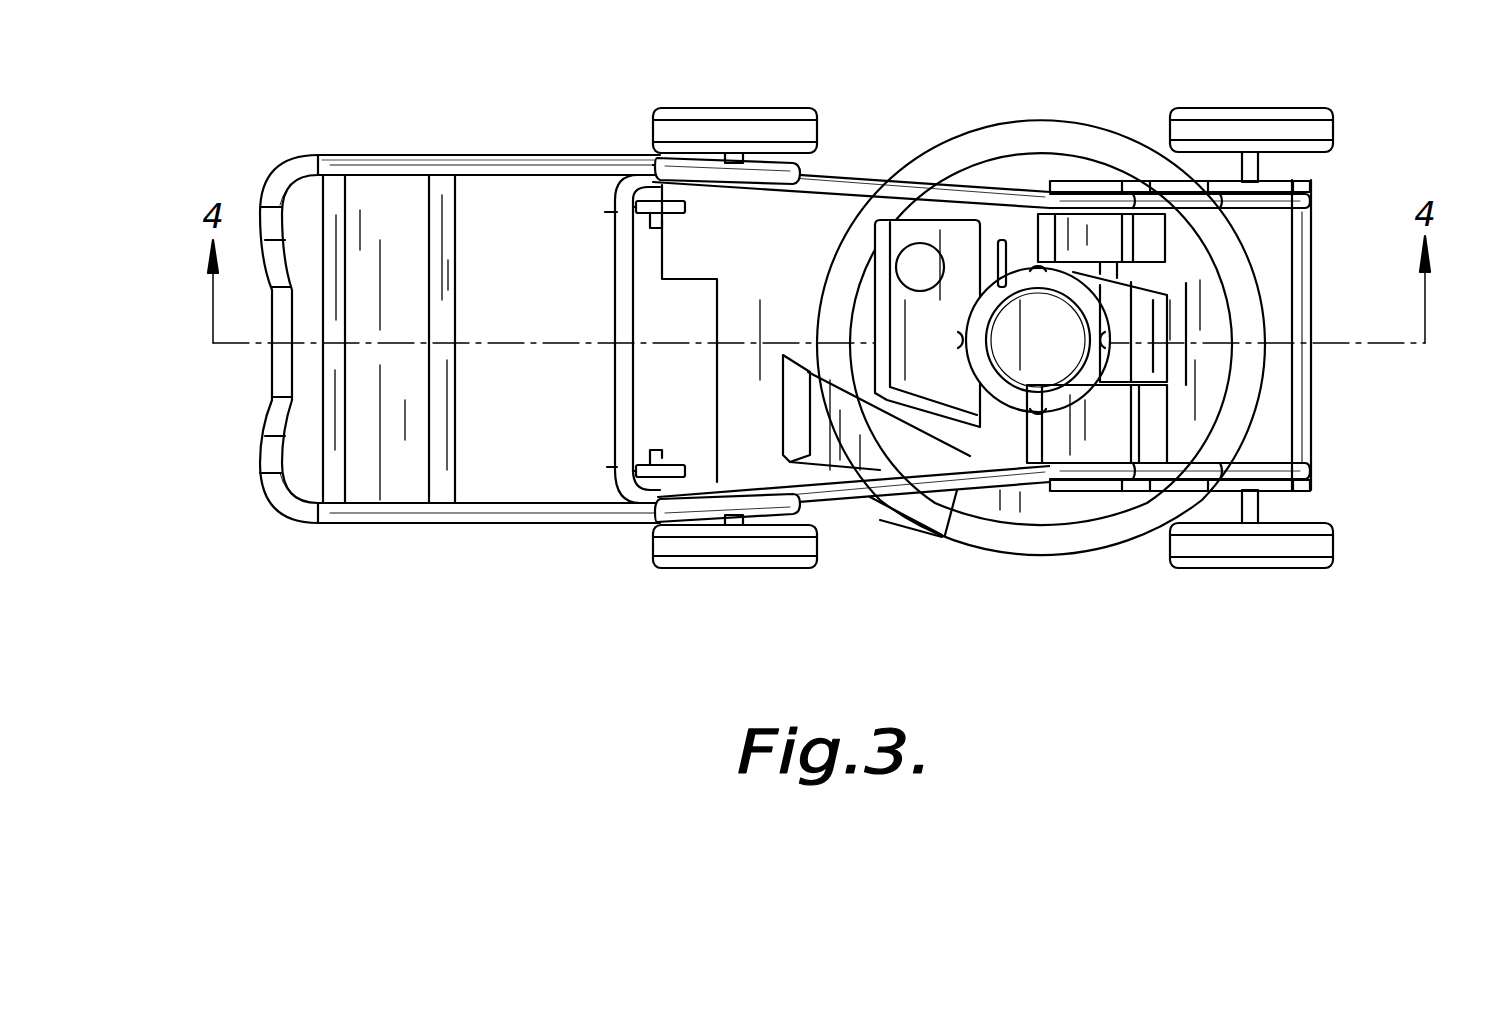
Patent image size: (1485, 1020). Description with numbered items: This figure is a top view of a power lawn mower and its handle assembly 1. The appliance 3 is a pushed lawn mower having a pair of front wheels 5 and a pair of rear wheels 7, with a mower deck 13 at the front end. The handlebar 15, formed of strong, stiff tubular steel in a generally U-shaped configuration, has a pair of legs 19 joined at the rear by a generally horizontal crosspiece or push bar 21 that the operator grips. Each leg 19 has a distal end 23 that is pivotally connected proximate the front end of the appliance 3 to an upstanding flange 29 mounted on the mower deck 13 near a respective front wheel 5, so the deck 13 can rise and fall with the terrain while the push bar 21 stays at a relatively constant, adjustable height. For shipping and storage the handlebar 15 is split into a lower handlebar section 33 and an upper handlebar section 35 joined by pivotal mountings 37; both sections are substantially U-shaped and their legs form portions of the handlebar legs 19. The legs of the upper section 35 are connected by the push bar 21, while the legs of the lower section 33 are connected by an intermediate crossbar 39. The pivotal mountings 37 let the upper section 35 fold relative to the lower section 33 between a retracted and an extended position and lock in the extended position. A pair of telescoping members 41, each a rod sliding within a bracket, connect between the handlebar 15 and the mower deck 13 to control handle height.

The handle assembly 1 is at (516, 538).
The appliance 3 is at (822, 306).
The front wheel 5 is at (1282, 107).
The rear wheel 7 is at (775, 107).
The mower deck 13 is at (1050, 556).
The handlebar 15 is at (418, 343).
The legs 19 is at (557, 152).
The push bar 21 is at (278, 383).
The distal end 23 is at (1312, 200).
The upstanding flange 29 is at (1285, 180).
The lower handlebar section 33 is at (845, 178).
The upper handlebar section 35 is at (472, 153).
The pivotal mountings 37 is at (705, 160).
The intermediate crossbar 39 is at (613, 388).
The telescoping members 41 is at (672, 212).